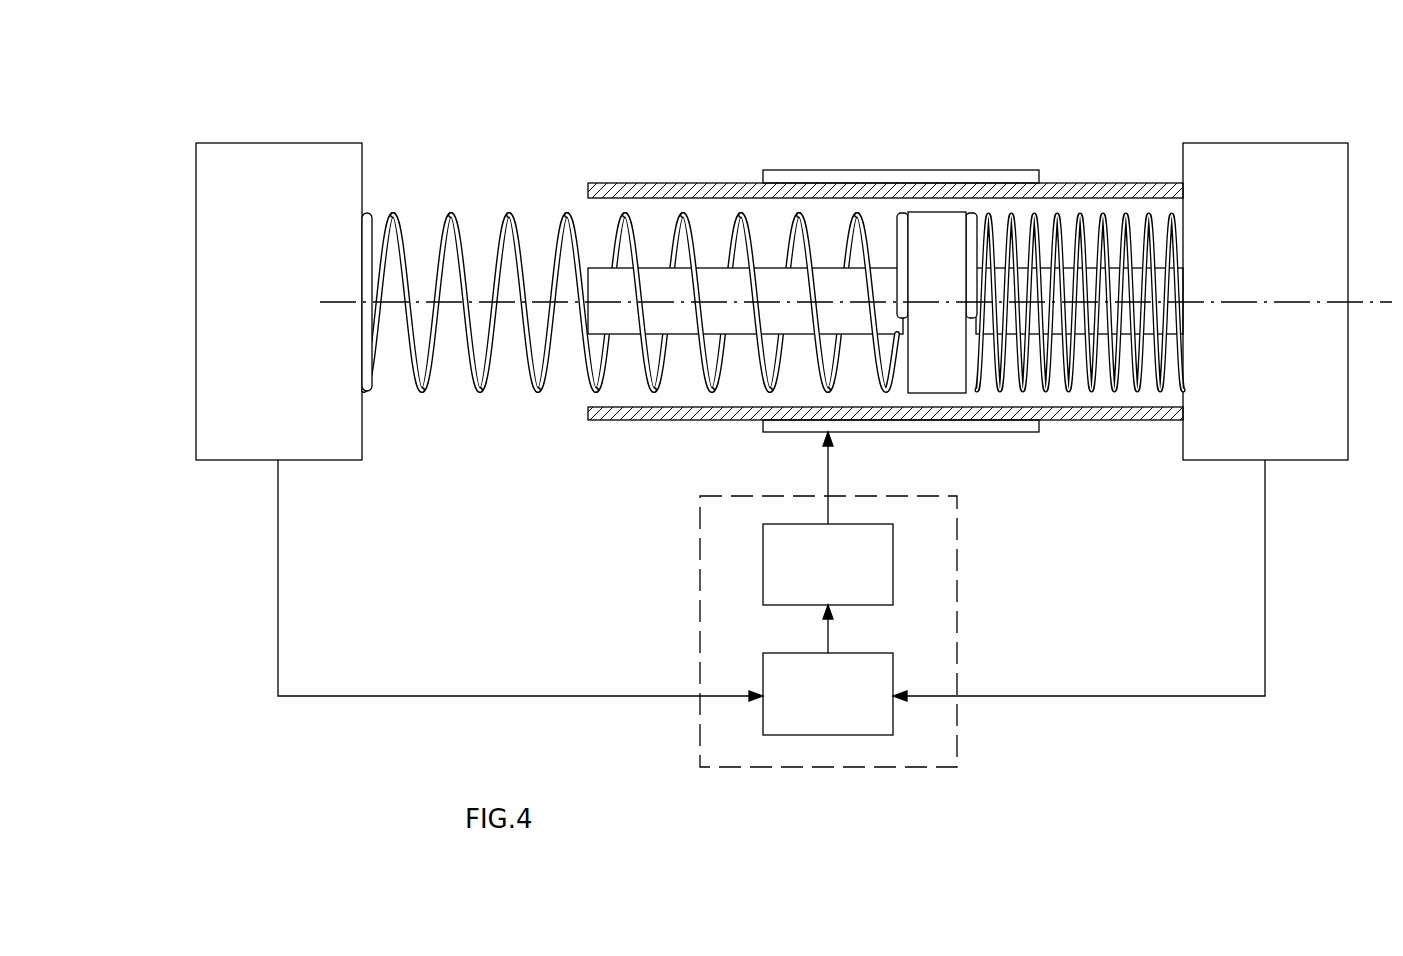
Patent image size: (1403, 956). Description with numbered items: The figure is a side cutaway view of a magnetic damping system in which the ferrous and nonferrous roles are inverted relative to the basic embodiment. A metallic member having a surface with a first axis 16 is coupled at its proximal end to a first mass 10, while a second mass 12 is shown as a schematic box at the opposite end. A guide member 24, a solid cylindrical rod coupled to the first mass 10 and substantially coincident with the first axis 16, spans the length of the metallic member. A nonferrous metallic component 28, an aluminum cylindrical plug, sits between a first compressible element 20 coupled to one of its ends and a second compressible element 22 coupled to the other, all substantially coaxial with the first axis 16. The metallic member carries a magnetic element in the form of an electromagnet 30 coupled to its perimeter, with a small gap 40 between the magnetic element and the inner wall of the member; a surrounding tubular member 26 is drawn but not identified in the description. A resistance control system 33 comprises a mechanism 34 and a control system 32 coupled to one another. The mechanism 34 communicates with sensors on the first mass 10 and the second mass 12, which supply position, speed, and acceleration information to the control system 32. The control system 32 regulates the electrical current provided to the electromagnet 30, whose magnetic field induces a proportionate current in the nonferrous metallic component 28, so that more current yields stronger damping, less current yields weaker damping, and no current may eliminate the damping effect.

The first mass 10 is at (1240, 143).
The second mass 12 is at (290, 143).
The first axis 16 is at (1388, 302).
The first compressible element 20 is at (1055, 213).
The second compressible element 22 is at (632, 298).
The guide member 24 is at (627, 335).
The housing 26 is at (655, 183).
The nonferrous metallic component 28 is at (942, 225).
The electromagnet 30 is at (975, 432).
The control system 32 is at (828, 518).
The resistance control system 33 is at (957, 620).
The mechanism 34 is at (771, 597).
The gap 40 is at (922, 203).